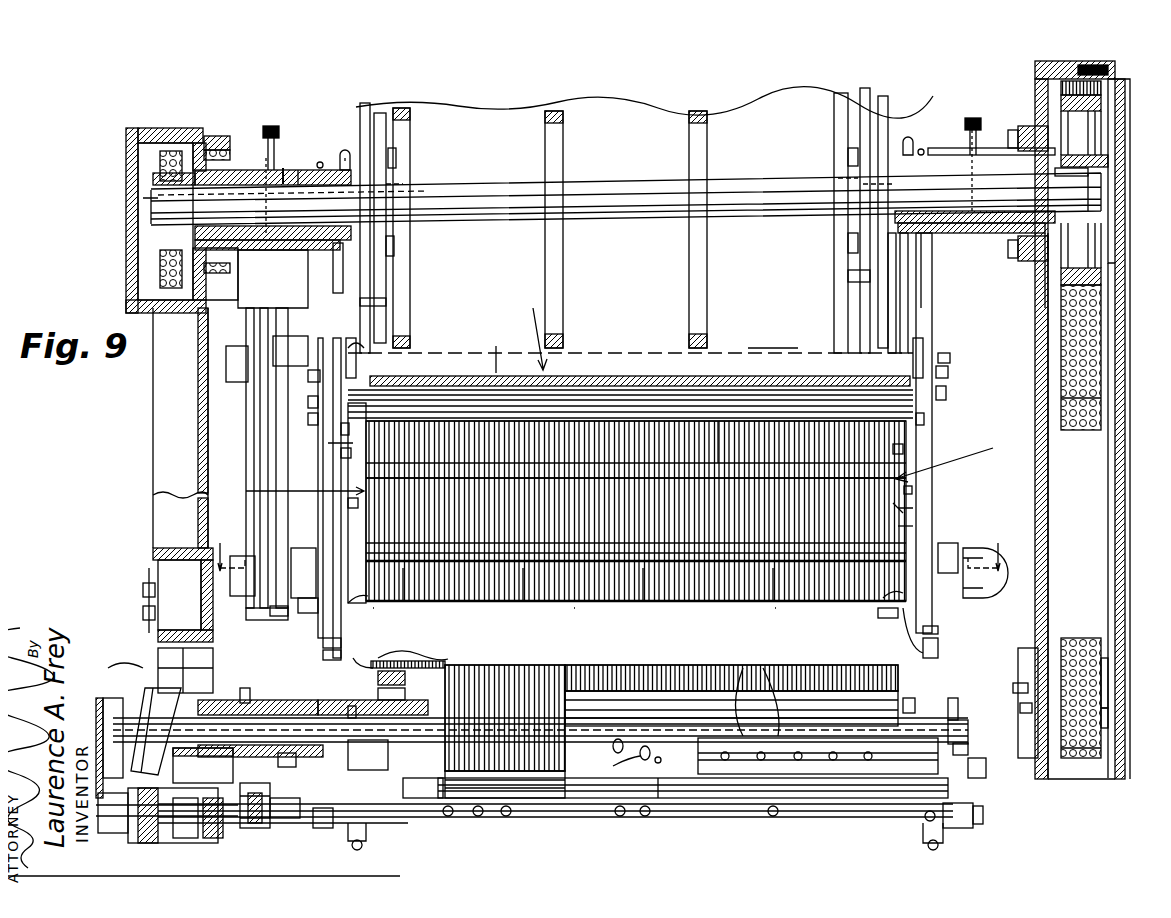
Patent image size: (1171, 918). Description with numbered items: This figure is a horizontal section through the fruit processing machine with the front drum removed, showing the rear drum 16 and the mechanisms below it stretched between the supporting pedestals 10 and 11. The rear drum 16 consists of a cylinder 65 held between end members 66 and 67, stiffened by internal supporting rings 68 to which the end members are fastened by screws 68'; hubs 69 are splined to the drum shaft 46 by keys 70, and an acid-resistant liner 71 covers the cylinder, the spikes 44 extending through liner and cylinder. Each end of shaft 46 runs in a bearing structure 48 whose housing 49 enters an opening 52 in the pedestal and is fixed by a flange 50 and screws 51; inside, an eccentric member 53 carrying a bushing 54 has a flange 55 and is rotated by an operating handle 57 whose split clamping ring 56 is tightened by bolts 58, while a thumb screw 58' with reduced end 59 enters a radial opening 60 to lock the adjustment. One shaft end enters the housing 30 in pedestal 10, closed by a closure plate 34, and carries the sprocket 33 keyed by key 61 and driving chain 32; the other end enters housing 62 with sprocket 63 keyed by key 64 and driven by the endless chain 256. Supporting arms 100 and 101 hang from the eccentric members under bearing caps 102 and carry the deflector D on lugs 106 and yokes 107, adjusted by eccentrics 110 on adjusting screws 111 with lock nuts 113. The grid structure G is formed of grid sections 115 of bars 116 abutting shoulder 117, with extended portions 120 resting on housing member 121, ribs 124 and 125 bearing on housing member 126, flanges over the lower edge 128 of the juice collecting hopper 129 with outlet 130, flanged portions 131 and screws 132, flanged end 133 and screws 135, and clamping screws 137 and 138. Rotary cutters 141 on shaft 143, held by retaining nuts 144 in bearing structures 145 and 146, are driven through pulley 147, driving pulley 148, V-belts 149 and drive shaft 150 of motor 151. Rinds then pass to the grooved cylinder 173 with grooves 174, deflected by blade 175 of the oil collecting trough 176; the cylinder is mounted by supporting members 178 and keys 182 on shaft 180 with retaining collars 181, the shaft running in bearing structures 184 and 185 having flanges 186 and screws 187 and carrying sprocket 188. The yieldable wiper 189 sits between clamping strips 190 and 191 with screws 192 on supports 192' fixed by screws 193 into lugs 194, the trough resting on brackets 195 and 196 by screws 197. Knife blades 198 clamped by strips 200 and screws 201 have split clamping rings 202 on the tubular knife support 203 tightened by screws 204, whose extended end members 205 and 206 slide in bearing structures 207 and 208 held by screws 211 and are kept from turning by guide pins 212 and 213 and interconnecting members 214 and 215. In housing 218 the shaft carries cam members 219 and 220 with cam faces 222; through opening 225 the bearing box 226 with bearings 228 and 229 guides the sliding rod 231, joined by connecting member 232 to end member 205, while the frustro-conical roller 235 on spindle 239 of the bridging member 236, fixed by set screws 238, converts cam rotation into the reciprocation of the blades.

The supporting pedestal 10 is at (152, 425).
The supporting pedestal 11 is at (1108, 475).
The rear drum 16 is at (629, 95).
The housing 30 is at (140, 285).
The chain 32 is at (155, 262).
The sprocket 33 is at (152, 152).
The closure plate 34 is at (125, 236).
The spikes 44 is at (795, 396).
The drum shaft 46 is at (625, 175).
The bearing structure 48 is at (979, 238).
The bearing housing 49 is at (950, 226).
The annular flange 50 is at (1012, 120).
The screws 51 is at (1012, 250).
The openings 52 is at (1040, 165).
The eccentric member 53 is at (928, 142).
The bushing 54 is at (945, 150).
The flange 55 is at (1093, 210).
The split clamping ring 56 is at (845, 148).
The operating handle 57 is at (900, 262).
The bolt 58 is at (624, 147).
The thumb screw 58' is at (631, 126).
The reduced end 59 is at (283, 176).
The radial opening 60 is at (962, 195).
The key 61 is at (143, 185).
The housing 62 is at (1093, 650).
The sprocket 63 is at (1080, 130).
The key 64 is at (1093, 158).
The cylinder 65 is at (758, 340).
The end member 66 is at (395, 296).
The end member 67 is at (840, 270).
The supporting ring 68 is at (615, 220).
The screws 68' is at (640, 222).
The hub 69 is at (840, 230).
The key 70 is at (840, 172).
The liner 71 is at (490, 345).
The supporting arm 100 is at (325, 512).
The supporting arm 101 is at (924, 300).
The bearing cap 102 is at (913, 141).
The lug 106 is at (938, 385).
The yoke 107 is at (916, 410).
The eccentric 110 is at (915, 360).
The adjusting screw 111 is at (940, 365).
The lock nut 113 is at (942, 350).
The grid section 115 is at (818, 398).
The bar 116 is at (815, 592).
The shoulder 117 is at (712, 410).
The extended portion 120 is at (875, 643).
The housing member 121 is at (910, 650).
The reinforcing rib 124 is at (880, 430).
The reinforcing rib 125 is at (895, 500).
The housing member 126 is at (905, 520).
The lower edge 128 is at (340, 522).
The juice collecting hopper 129 is at (900, 345).
The outlet 130 is at (820, 470).
The flanged portion 131 is at (905, 500).
The screws 132 is at (905, 480).
The flanged end 133 is at (930, 622).
The screws 135 is at (930, 645).
The screws 137 is at (895, 440).
The screws 138 is at (880, 590).
The rotary cutter 141 is at (767, 592).
The shaft 143 is at (930, 545).
The retaining nut 144 is at (870, 612).
The bearing structure 145 is at (268, 615).
The bearing structure 146 is at (974, 583).
The double V-belt pulley 147 is at (236, 610).
The driving pulley 148 is at (238, 320).
The V-belt 149 is at (252, 385).
The drive shaft 150 is at (218, 352).
The motor 151 is at (292, 338).
The grooved cylinder 173 is at (455, 660).
The peripheral groove 174 is at (775, 660).
The blade 175 is at (592, 690).
The oil collecting trough 176 is at (652, 792).
The supporting member 178 is at (375, 652).
The shaft 180 is at (1100, 705).
The retaining collar 181 is at (905, 700).
The key 182 is at (430, 650).
The bearing structure 184 is at (262, 700).
The bearing structure 185 is at (1005, 680).
The flange 186 is at (1015, 650).
The screws 187 is at (1012, 700).
The sprocket 188 is at (1100, 665).
The yieldable wiper 189 is at (700, 745).
The clamping strip 190 is at (715, 752).
The clamping strip 191 is at (750, 752).
The screws 192 is at (828, 799).
The support 192' is at (615, 769).
The screws 193 is at (790, 752).
The lug 194 is at (735, 658).
The bracket 195 is at (345, 742).
The bracket 196 is at (948, 715).
The screws 197 is at (940, 725).
The knife blade 198 is at (530, 795).
The clamping strip 200 is at (575, 790).
The screws 201 is at (598, 792).
The split clamping ring 202 is at (347, 842).
The tubular knife support 203 is at (410, 792).
The screws 204 is at (633, 810).
The extended end member 205 is at (385, 805).
The extended end member 206 is at (978, 800).
The bearing structure 207 is at (300, 812).
The bearing structure 208 is at (965, 810).
The screws 211 is at (960, 740).
The guide pin 212 is at (250, 822).
The guide pin 213 is at (978, 760).
The interconnecting member 214 is at (318, 822).
The interconnecting member 215 is at (928, 808).
The housing 218 is at (135, 585).
The cam member 219 is at (140, 690).
The cam member 220 is at (190, 724).
The cam face 222 is at (185, 665).
The opening 225 is at (201, 765).
The bearing box 226 is at (108, 827).
The bearing 228 is at (125, 805).
The bearing 229 is at (252, 796).
The sliding rod 231 is at (251, 820).
The connecting member 232 is at (213, 830).
The frustro-conical roller 235 is at (110, 700).
The connecting member 236 is at (140, 835).
The set screw 238 is at (186, 830).
The spindle 239 is at (130, 658).
The endless chain 256 is at (1095, 740).
The deflector D is at (531, 330).
The grid structure G is at (618, 466).